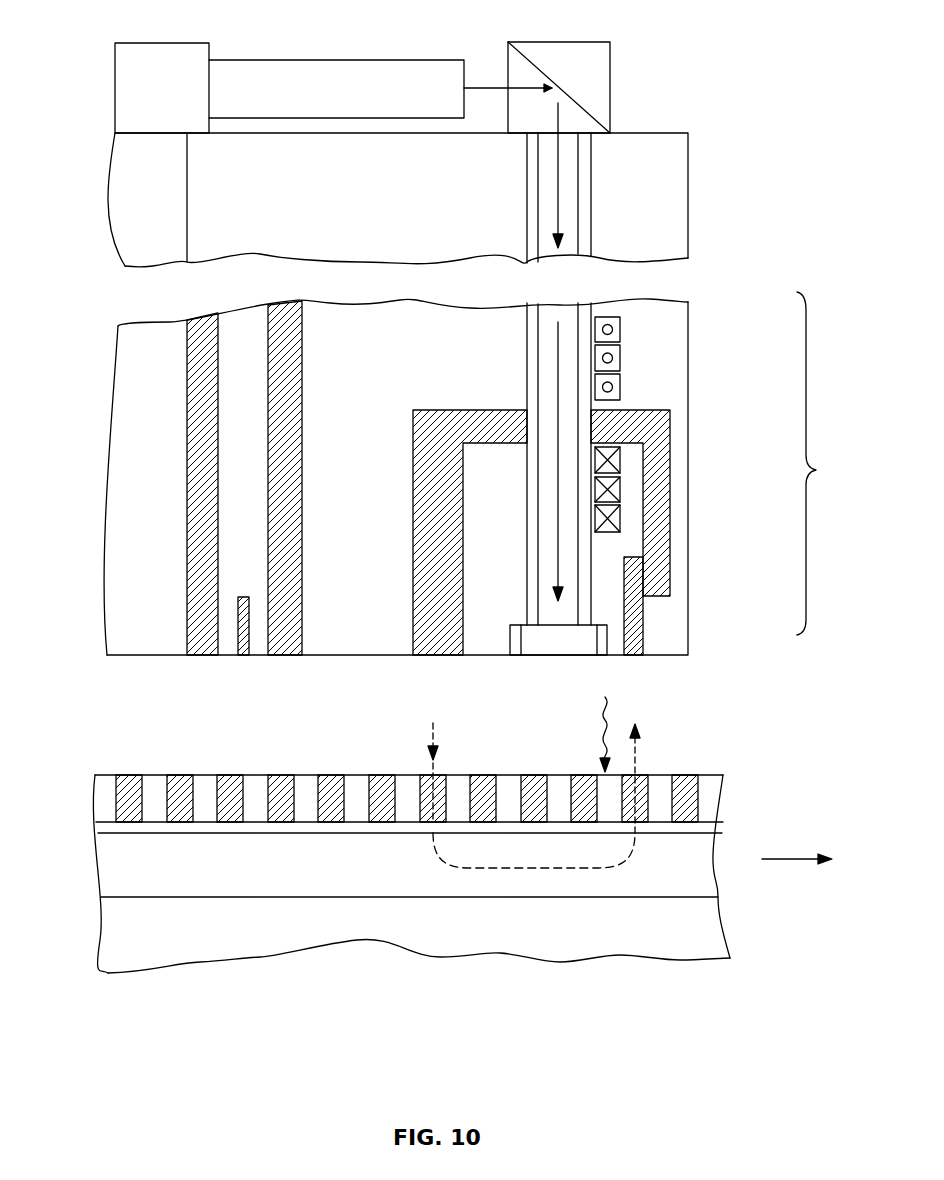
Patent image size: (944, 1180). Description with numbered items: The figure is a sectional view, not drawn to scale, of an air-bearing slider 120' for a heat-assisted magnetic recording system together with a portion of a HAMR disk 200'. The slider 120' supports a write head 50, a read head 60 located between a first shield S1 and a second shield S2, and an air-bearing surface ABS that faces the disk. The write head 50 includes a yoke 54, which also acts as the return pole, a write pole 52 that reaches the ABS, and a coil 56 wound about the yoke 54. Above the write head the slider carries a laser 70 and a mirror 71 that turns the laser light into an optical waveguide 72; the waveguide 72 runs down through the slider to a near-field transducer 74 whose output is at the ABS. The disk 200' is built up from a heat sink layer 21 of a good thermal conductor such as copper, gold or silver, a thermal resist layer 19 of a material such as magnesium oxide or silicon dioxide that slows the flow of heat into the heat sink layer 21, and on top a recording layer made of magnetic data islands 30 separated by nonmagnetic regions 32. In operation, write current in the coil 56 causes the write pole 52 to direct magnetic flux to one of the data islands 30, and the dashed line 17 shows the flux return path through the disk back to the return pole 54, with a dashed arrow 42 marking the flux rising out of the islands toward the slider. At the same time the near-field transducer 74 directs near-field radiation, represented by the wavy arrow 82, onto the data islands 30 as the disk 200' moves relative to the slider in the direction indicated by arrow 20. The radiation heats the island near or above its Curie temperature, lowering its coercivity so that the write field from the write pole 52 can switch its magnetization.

The laser 70 is at (131, 43).
The mirror 71 is at (611, 84).
The optical waveguide 72 is at (540, 212).
The air-bearing slider 120' is at (463, 186).
The write head 50 is at (479, 473).
The shield S1 is at (187, 371).
The shield S2 is at (302, 369).
The read head 60 is at (238, 608).
The yoke 54 is at (413, 452).
The coil 56 is at (627, 532).
The write pole 52 is at (643, 610).
The near-field transducer 74 is at (545, 656).
The air-bearing surface ABS is at (132, 655).
The HAMR disk 200' is at (376, 892).
The data islands 30 is at (116, 790).
The nonmagnetic regions 32 is at (157, 781).
The thermal resist layer 19 is at (713, 833).
The heat sink layer 21 is at (700, 866).
The flux return path 17 is at (525, 870).
The return field / reflected light 42 is at (639, 727).
The near-field radiation 82 is at (600, 722).
The media motion direction 20 is at (798, 855).